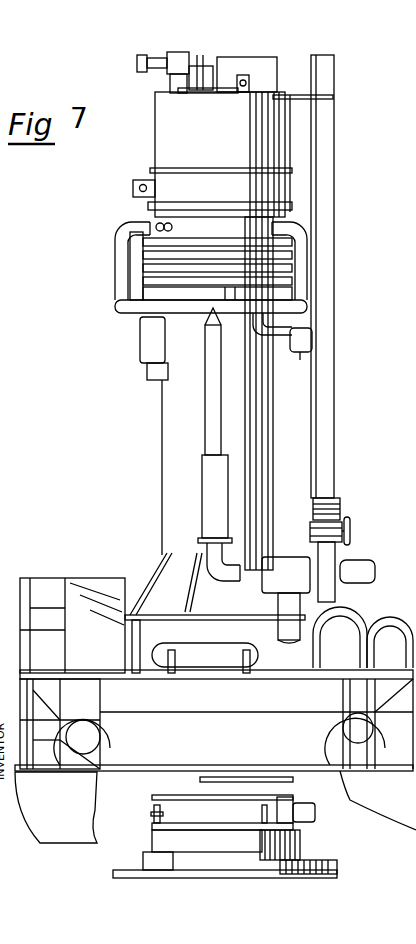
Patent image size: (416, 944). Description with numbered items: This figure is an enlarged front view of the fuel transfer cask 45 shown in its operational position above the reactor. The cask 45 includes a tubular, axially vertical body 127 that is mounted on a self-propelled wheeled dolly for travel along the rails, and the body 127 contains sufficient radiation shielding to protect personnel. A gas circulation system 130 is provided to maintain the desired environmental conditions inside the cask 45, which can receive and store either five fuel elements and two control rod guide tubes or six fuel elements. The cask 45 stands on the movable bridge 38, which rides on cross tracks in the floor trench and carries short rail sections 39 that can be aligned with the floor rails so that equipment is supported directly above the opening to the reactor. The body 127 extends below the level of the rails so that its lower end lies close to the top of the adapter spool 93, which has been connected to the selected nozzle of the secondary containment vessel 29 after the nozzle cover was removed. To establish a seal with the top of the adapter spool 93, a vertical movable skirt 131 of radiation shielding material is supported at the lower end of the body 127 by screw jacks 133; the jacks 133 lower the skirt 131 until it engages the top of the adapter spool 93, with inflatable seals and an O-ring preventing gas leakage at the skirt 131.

The fuel transfer cask 45 is at (86, 197).
The secondary containment vessel 29 is at (363, 276).
The tubular, axially vertical body 127 is at (165, 413).
The gas circulation system 130 is at (342, 556).
The short rail sections 39 is at (140, 768).
The movable bridge 38 is at (408, 795).
The screw jacks 133 is at (157, 820).
The vertical movable skirt 131 is at (155, 845).
The adapter spool 93 is at (333, 866).